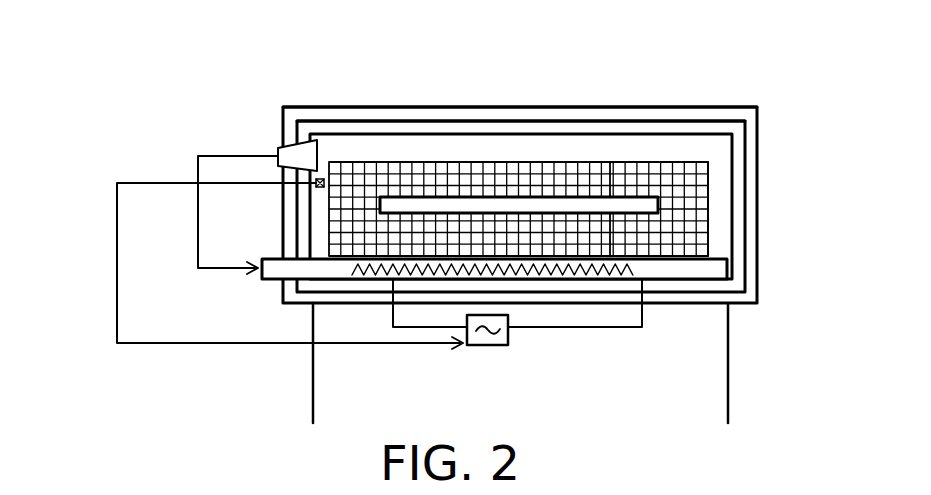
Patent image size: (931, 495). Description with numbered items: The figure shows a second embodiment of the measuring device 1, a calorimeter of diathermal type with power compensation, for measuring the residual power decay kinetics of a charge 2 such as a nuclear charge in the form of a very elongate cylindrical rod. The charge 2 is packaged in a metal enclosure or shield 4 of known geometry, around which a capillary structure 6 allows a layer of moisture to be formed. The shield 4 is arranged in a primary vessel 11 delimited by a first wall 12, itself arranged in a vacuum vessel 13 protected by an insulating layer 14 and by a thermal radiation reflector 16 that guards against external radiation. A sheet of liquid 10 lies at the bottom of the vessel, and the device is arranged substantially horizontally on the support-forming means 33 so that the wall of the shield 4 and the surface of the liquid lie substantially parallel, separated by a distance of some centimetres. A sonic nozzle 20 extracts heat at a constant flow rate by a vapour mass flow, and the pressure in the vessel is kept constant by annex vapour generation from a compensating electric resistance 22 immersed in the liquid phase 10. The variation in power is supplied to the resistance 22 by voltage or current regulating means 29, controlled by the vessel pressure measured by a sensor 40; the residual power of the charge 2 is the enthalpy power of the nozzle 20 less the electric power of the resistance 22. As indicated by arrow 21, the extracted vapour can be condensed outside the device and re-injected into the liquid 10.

The measuring device 1 is at (176, 112).
The charge 2 is at (382, 205).
The shield 4 is at (707, 247).
The capillary structure 6 is at (712, 207).
The sheet of liquid 10 is at (373, 282).
The primary vessel 11 is at (701, 143).
The first wall 12 is at (527, 134).
The vacuum vessel 13 is at (636, 128).
The insulating layer 14 is at (476, 121).
The thermal radiation reflector 16 is at (398, 108).
The sonic nozzle 20 is at (278, 147).
The arrow 21 is at (197, 211).
The compensating electric resistance 22 is at (611, 279).
The voltage or current regulating means 29 is at (490, 342).
The support-forming means 33 is at (443, 387).
The sensor 40 is at (322, 178).